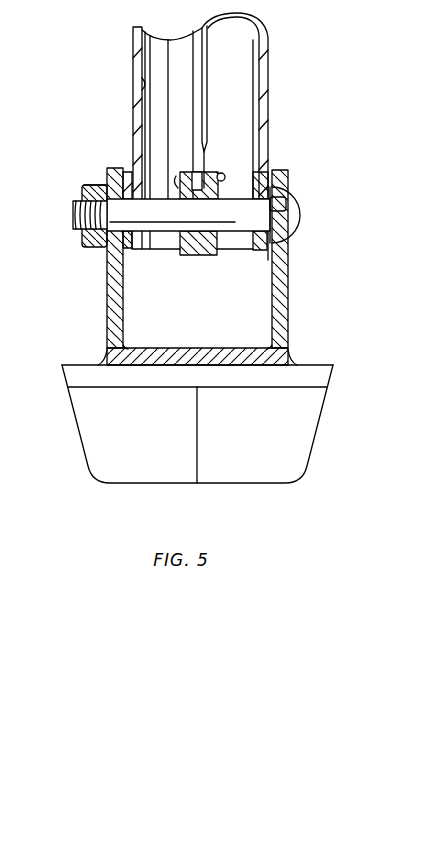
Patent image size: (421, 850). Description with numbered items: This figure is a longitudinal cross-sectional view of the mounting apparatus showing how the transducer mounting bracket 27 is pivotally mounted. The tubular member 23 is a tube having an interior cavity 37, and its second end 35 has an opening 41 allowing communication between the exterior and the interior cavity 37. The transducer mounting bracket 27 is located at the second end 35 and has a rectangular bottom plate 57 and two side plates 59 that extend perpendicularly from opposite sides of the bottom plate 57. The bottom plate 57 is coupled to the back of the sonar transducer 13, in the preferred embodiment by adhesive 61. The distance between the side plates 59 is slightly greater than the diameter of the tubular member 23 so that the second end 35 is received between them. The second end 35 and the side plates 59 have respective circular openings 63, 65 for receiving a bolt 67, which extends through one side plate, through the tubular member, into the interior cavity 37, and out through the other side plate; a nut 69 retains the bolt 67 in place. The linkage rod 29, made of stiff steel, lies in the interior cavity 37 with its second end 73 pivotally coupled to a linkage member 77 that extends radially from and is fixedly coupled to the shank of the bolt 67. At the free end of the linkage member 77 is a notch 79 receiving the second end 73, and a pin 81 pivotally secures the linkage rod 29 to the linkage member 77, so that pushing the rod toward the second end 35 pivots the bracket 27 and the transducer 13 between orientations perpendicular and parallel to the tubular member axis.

The sonar transducer 13 is at (175, 428).
The bottom plate 57 is at (145, 358).
The transducer mounting bracket 27 is at (202, 266).
The side plates 59 is at (112, 322).
The adhesive 61 is at (298, 364).
The tubular member 23 is at (198, 106).
The interior cavity 37 is at (141, 83).
The linkage rod 29 is at (202, 88).
The opening 41 is at (152, 250).
The second end 35 is at (263, 248).
The linkage member 77 is at (190, 254).
The pin 81 is at (225, 178).
The second end 73 is at (195, 107).
The notch 79 is at (198, 163).
The circular openings 63 is at (88, 246).
The nut 69 is at (92, 183).
The circular openings 65 is at (194, 218).
The bolt 67 is at (262, 222).